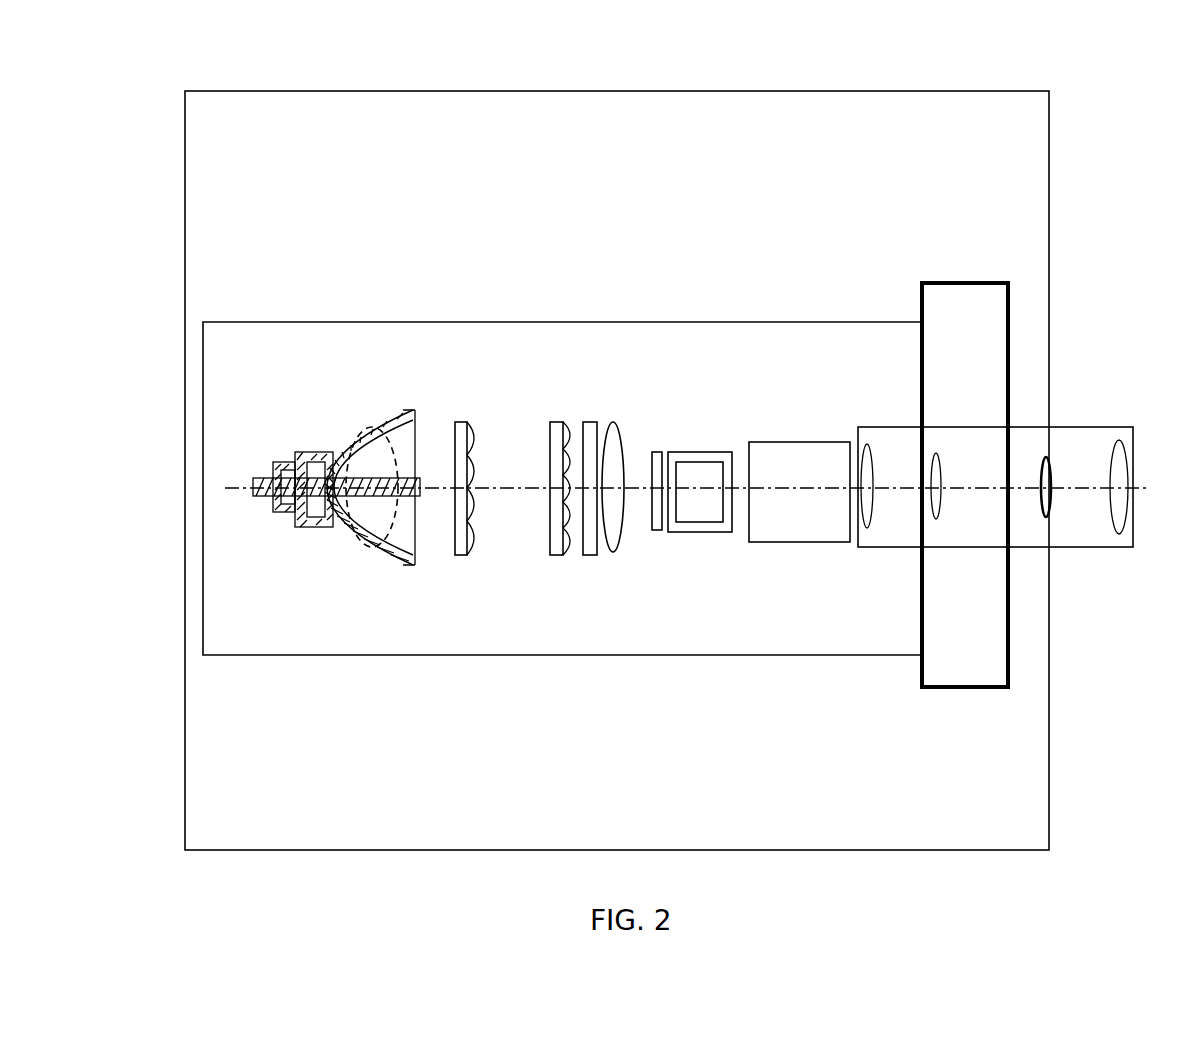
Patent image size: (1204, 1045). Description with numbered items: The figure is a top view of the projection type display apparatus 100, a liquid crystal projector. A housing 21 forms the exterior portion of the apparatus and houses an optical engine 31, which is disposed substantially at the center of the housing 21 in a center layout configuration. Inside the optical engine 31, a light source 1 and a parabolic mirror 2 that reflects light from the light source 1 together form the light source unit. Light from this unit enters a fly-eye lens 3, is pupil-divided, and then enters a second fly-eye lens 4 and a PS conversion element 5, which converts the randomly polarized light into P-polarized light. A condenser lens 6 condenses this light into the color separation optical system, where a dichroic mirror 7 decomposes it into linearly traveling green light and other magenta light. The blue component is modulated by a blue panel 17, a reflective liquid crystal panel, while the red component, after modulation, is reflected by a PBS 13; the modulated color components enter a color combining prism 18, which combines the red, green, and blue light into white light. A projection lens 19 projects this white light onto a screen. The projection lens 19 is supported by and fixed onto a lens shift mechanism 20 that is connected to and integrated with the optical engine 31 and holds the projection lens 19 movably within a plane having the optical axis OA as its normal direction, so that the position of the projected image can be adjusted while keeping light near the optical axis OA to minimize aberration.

The projection type display apparatus 100 is at (1105, 77).
The housing 21 is at (1049, 180).
The optical engine 31 is at (590, 322).
The light source 1 is at (345, 492).
The mirror 2 is at (387, 557).
The fly-eye lens 3 is at (455, 553).
The fly-eye lens 4 is at (555, 550).
The PS conversion element 5 is at (587, 555).
The condenser lens 6 is at (617, 555).
The blue panel 17 is at (657, 452).
The dichroic mirror 7 is at (718, 453).
The PBS 13 is at (693, 462).
The color combining prism 18 is at (800, 458).
The projection lens 19 is at (948, 427).
The lens shift mechanism 20 is at (987, 350).
The optical axis OA is at (1081, 488).